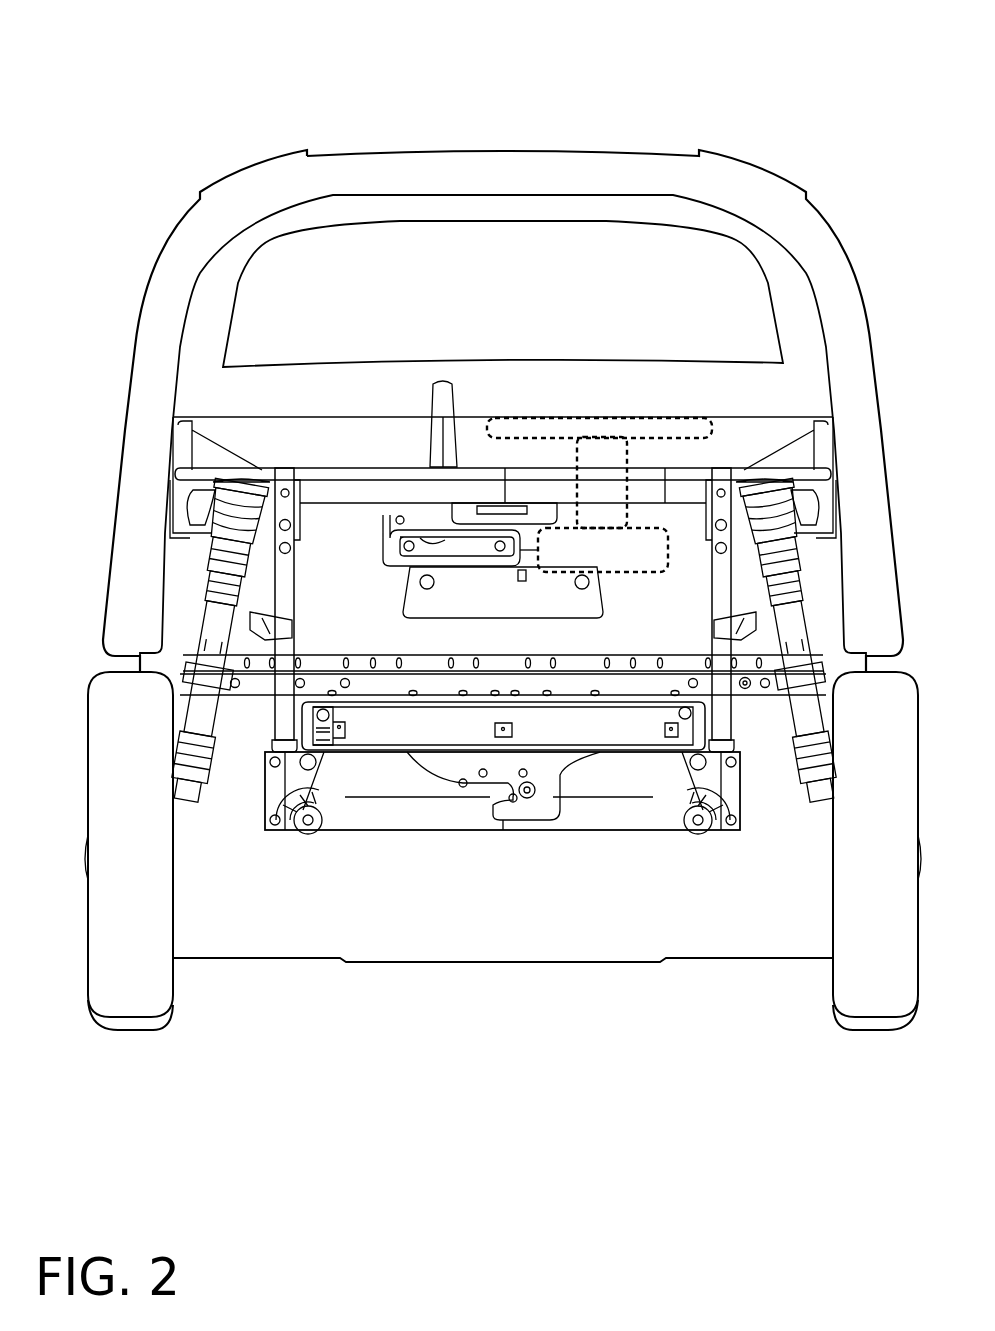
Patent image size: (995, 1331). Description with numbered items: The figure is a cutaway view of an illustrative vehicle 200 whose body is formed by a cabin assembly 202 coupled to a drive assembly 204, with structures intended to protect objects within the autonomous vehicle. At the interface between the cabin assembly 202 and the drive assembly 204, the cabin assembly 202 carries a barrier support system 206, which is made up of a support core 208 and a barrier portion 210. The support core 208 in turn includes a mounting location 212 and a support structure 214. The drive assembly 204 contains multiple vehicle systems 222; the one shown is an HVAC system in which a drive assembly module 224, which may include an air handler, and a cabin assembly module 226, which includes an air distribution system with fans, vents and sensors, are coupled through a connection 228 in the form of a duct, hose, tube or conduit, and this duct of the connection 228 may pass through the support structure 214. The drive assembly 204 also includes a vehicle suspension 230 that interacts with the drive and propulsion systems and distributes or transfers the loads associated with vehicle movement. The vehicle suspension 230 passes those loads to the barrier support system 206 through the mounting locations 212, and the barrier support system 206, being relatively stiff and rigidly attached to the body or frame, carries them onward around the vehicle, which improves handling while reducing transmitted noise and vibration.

The vehicle 200 is at (674, 66).
The cabin assembly 202 is at (477, 157).
The drive assembly 204 is at (686, 1003).
The barrier support system 206 is at (259, 446).
The support core 208 is at (347, 543).
The barrier portion 210 is at (390, 488).
The mounting location 212 is at (240, 500).
The support structure 214 is at (335, 548).
The vehicle system 222 is at (699, 537).
The drive assembly module 224 is at (603, 550).
The cabin assembly module 226 is at (623, 417).
The connection 228 is at (603, 460).
The vehicle suspension 230 is at (222, 530).